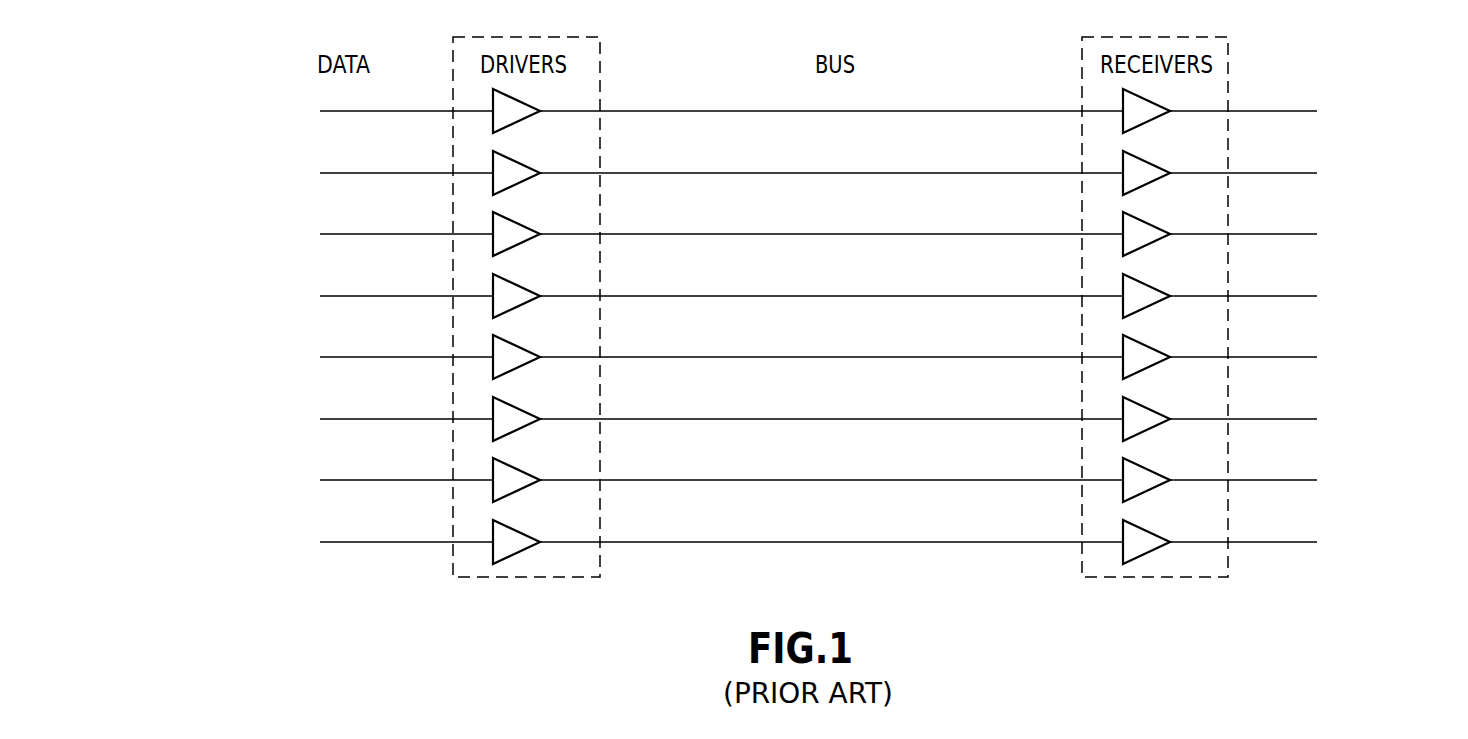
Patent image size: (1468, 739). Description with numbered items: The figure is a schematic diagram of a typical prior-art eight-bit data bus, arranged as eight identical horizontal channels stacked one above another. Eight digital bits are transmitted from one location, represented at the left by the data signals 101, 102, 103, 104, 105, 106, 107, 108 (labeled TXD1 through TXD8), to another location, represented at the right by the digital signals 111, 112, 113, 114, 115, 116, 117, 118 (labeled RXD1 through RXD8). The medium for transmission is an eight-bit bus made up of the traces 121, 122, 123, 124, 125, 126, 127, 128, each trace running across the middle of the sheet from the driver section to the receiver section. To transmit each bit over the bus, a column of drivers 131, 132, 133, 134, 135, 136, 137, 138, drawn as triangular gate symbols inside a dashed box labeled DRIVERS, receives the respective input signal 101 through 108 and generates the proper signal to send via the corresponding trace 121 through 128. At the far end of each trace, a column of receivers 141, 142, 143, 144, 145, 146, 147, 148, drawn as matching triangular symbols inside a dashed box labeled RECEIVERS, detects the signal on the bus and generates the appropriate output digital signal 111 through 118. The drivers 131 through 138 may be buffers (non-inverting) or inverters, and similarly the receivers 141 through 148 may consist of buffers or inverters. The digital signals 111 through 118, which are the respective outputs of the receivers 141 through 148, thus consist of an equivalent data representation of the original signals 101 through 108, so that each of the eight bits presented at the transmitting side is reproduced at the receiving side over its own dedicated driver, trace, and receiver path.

The signal 101 is at (240, 108).
The signal 102 is at (325, 172).
The signal 103 is at (325, 233).
The signal 104 is at (325, 295).
The signal 105 is at (325, 356).
The signal 106 is at (325, 418).
The signal 107 is at (325, 479).
The signal 108 is at (325, 541).
The digital signal 111 is at (1382, 110).
The digital signal 112 is at (1317, 168).
The digital signal 113 is at (1317, 229).
The digital signal 114 is at (1317, 291).
The digital signal 115 is at (1317, 352).
The digital signal 116 is at (1317, 414).
The digital signal 117 is at (1317, 475).
The digital signal 118 is at (1317, 537).
The trace 121 is at (730, 110).
The trace 122 is at (831, 161).
The trace 123 is at (831, 222).
The trace 124 is at (831, 284).
The trace 125 is at (831, 345).
The trace 126 is at (831, 407).
The trace 127 is at (831, 468).
The trace 128 is at (831, 530).
The driver 131 is at (528, 103).
The driver 132 is at (537, 169).
The driver 133 is at (537, 230).
The driver 134 is at (537, 292).
The driver 135 is at (537, 353).
The driver 136 is at (537, 415).
The driver 137 is at (537, 476).
The driver 138 is at (537, 538).
The receiver 141 is at (1160, 103).
The receiver 142 is at (1168, 169).
The receiver 143 is at (1168, 230).
The receiver 144 is at (1168, 292).
The receiver 145 is at (1168, 353).
The receiver 146 is at (1168, 415).
The receiver 147 is at (1168, 476).
The receiver 148 is at (1168, 538).